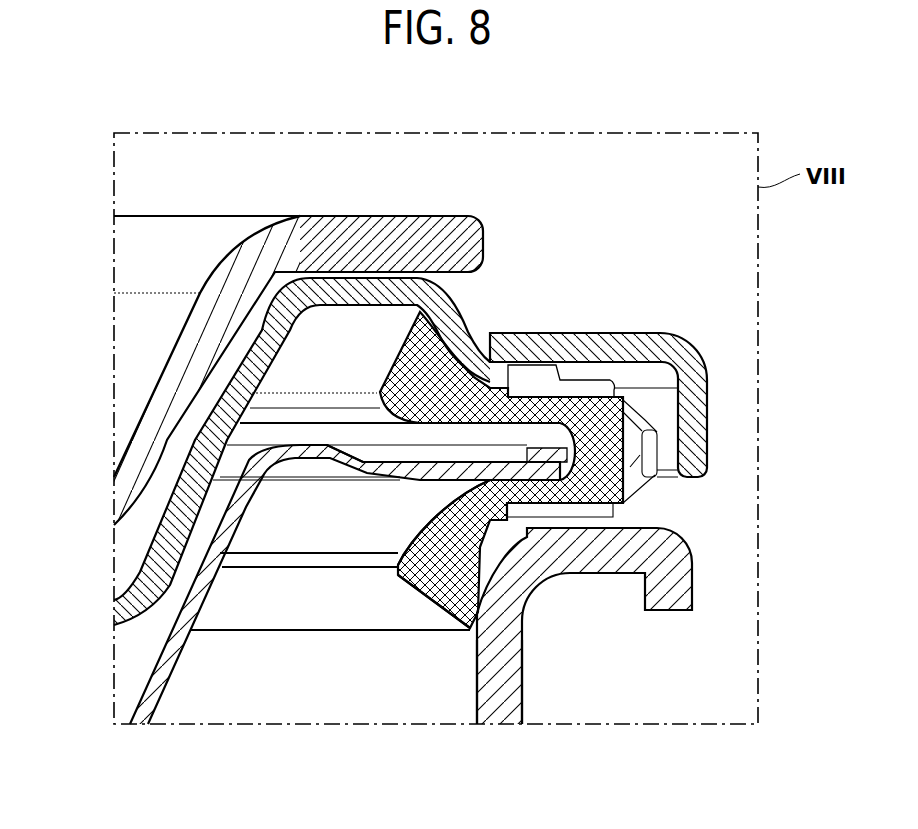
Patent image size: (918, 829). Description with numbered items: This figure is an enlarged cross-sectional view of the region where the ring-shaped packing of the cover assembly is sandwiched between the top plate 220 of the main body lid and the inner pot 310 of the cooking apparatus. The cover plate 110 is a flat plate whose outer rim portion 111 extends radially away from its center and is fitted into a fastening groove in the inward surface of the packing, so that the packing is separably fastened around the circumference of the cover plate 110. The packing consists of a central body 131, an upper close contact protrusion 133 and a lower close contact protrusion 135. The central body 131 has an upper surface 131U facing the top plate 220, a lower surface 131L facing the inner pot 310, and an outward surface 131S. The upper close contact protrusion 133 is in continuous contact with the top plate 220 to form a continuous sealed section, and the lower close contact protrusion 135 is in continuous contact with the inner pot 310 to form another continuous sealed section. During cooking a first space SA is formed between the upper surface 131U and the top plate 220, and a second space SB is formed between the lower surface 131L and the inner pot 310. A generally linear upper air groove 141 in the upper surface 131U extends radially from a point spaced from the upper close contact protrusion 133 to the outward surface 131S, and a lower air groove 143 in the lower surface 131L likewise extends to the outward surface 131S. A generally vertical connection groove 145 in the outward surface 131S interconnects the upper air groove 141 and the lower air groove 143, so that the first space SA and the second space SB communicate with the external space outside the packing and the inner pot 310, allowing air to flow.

The cover plate 110 is at (160, 658).
The outer rim portion 111 is at (410, 477).
The top plate 220 is at (355, 287).
The central body 131 is at (655, 522).
The upper surface 131U is at (560, 345).
The outward surface 131S is at (657, 440).
The lower surface 131L is at (560, 534).
The upper close contact protrusion 133 is at (421, 312).
The lower close contact protrusion 135 is at (443, 603).
The upper air groove 141 is at (557, 389).
The lower air groove 143 is at (567, 517).
The connection groove 145 is at (633, 468).
The inner pot 310 is at (480, 692).
The first space SA is at (478, 357).
The second space SB is at (495, 540).